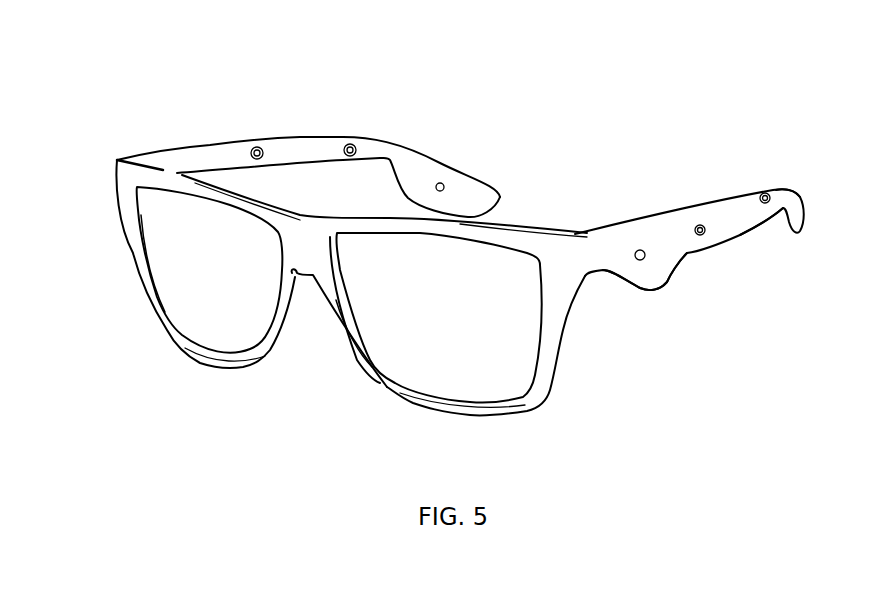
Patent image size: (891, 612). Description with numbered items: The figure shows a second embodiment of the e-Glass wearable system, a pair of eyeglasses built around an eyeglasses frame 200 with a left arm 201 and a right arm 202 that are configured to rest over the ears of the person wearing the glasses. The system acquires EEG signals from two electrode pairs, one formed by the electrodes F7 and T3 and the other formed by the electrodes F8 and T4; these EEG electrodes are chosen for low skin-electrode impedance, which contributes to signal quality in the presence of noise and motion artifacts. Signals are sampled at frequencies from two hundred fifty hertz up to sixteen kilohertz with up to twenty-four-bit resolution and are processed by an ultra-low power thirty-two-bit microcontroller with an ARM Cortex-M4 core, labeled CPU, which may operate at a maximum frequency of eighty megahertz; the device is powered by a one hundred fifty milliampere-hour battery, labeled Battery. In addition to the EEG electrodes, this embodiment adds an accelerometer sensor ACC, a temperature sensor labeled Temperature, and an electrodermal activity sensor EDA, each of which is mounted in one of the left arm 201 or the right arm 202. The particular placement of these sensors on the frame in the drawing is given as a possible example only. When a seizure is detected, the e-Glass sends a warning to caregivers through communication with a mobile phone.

The eyeglasses frame 200 is at (292, 275).
The left arm 201 is at (798, 198).
The right arm 202 is at (418, 150).
The battery Battery is at (480, 175).
The temperature sensor Temperature is at (333, 139).
The F8 electrode F8 is at (247, 141).
The T4 electrode T4 is at (357, 142).
The electrodermal activity sensor EDA is at (808, 138).
The T3 electrode T3 is at (768, 193).
The accelerometer sensor ACC is at (760, 230).
The F7 electrode F7 is at (716, 245).
The microcontroller CPU is at (667, 282).